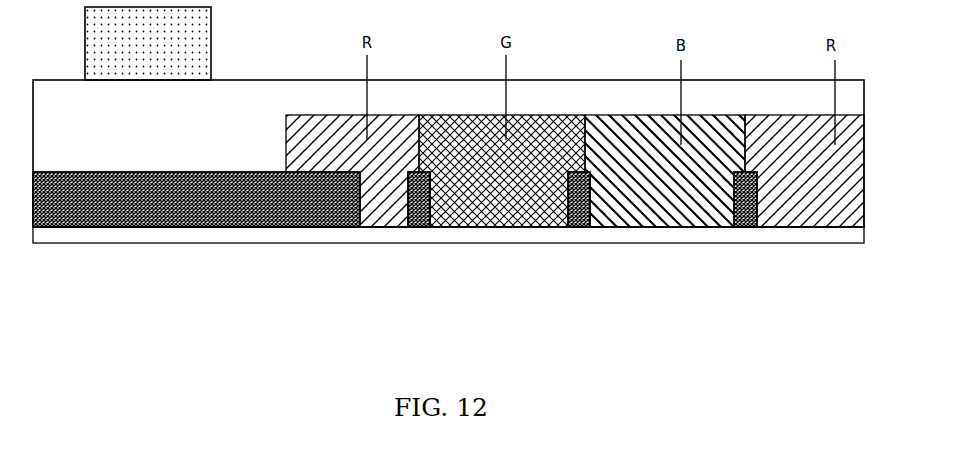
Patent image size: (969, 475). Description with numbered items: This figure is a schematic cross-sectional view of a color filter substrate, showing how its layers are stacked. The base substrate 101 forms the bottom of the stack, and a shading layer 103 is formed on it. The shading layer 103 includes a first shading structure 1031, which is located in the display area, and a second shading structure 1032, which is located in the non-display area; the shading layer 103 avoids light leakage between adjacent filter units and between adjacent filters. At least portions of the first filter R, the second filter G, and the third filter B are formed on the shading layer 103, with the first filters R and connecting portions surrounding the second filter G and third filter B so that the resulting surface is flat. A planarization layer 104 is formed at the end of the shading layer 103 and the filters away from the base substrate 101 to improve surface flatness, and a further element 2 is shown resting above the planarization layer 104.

The light emitting element / chip 2 is at (145, 53).
The base substrate 101 is at (687, 237).
The shading layer 103 is at (580, 228).
The first shading structure 1031 is at (420, 228).
The second shading structure 1032 is at (144, 192).
The planarization layer 104 is at (240, 110).